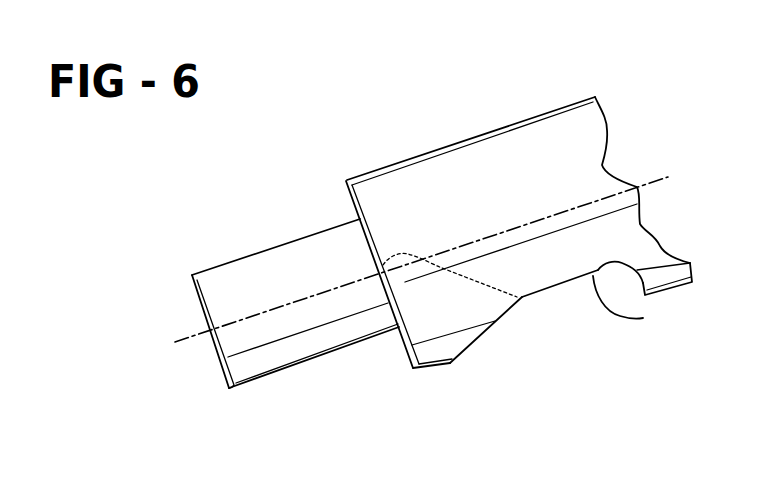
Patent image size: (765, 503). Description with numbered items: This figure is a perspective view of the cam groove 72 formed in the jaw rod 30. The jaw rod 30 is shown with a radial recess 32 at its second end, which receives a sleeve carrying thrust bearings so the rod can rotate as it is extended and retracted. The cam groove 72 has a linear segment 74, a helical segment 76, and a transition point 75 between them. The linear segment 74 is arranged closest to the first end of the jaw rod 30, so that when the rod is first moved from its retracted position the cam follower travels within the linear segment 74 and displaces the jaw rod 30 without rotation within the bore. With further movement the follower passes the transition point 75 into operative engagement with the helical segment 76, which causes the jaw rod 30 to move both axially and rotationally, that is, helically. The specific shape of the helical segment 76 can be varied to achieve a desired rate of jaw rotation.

The jaw rod 30 is at (519, 241).
The radial recess 32 is at (280, 267).
The cam groove 72 is at (562, 296).
The linear segment 74 is at (593, 284).
The transition point 75 is at (528, 297).
The helical segment 76 is at (475, 340).